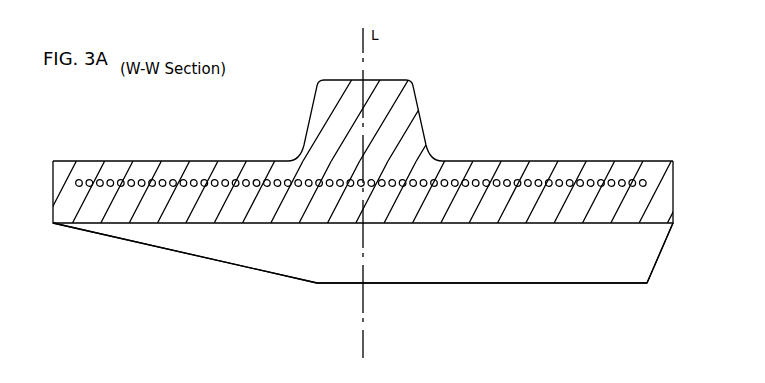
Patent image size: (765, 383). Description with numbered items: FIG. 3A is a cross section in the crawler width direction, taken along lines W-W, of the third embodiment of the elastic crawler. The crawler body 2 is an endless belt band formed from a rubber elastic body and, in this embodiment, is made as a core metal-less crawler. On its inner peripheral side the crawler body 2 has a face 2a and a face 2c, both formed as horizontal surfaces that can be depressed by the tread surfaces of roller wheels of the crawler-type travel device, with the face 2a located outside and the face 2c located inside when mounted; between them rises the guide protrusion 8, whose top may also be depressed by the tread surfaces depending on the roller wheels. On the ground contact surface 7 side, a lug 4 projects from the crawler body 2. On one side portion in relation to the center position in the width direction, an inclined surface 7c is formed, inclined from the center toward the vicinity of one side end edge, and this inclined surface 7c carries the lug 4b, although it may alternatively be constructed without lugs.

The crawler body 2 is at (66, 175).
The face 2a is at (192, 161).
The face 2c is at (572, 161).
The guide protrusion 8 is at (415, 100).
The lug 4 is at (587, 262).
The lug 4b is at (238, 246).
The ground contact surface 7 is at (508, 284).
The inclined surface 7c is at (174, 248).